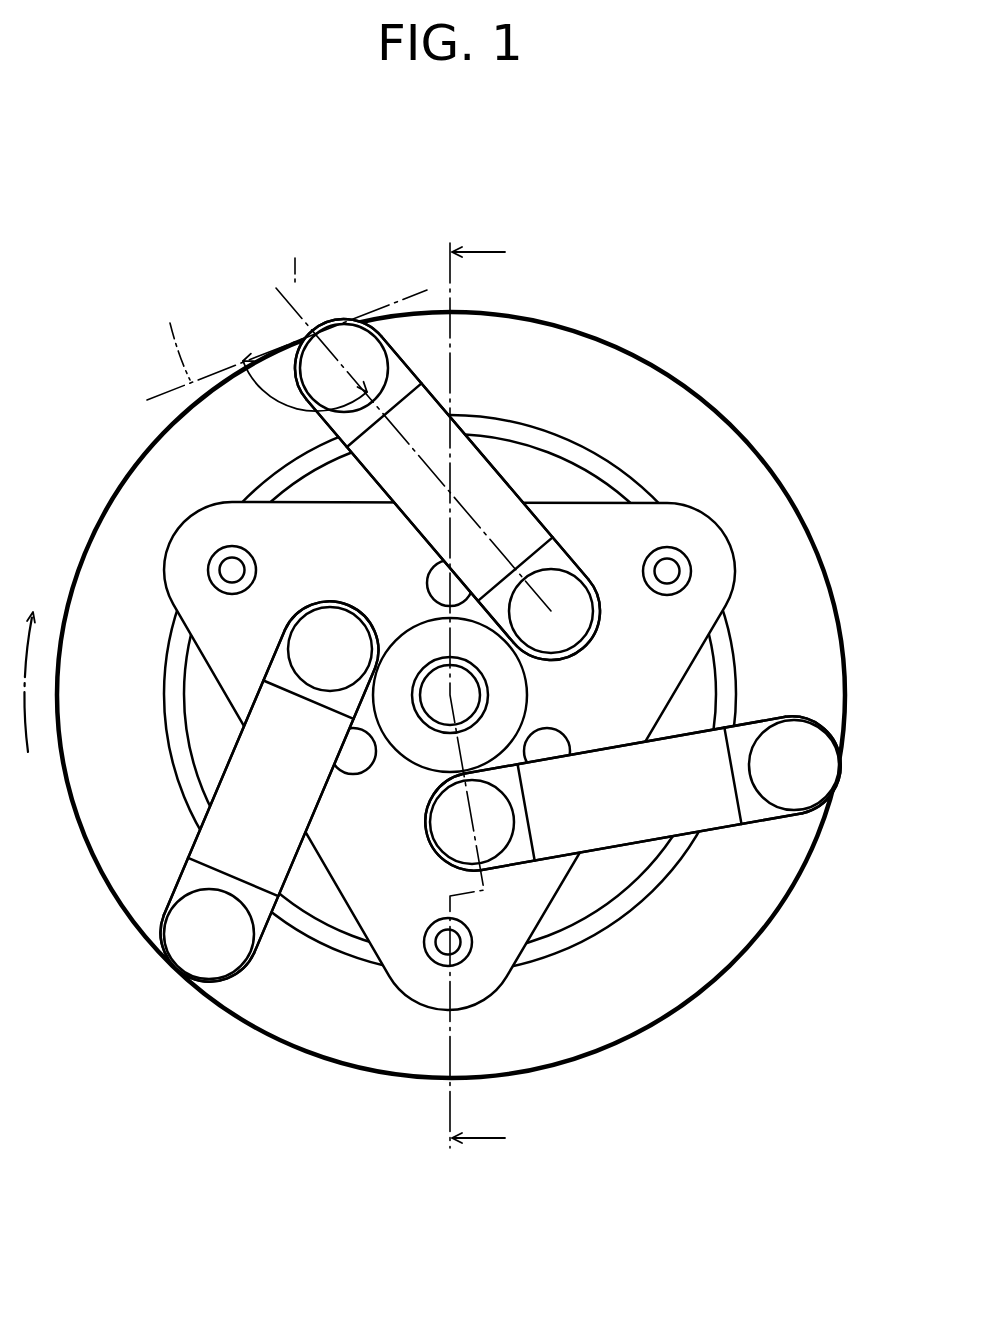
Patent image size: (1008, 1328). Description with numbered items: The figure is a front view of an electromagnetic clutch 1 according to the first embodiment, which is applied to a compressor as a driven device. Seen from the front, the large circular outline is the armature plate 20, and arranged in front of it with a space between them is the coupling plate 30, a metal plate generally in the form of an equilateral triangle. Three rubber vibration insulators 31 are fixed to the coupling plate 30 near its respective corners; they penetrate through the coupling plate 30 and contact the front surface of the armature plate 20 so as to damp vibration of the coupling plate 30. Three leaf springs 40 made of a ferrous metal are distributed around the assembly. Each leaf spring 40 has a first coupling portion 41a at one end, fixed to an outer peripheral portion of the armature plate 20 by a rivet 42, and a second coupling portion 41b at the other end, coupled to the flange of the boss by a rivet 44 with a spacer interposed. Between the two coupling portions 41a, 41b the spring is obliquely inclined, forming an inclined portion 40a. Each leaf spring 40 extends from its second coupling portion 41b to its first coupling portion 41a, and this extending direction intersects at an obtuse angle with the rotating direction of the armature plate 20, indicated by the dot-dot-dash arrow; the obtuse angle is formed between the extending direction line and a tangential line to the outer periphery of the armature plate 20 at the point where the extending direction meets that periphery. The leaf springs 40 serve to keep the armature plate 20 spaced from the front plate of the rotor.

The electromagnetic clutch 1 is at (461, 690).
The armature plate 20 is at (650, 387).
The coupling plate 30 is at (680, 528).
The rubber vibration insulator 31 is at (210, 565).
The leaf spring 40 is at (512, 483).
The inclined portion 40a is at (475, 470).
The first coupling portion 41a is at (394, 334).
The second coupling portion 41b is at (316, 612).
The rivet 42 is at (318, 357).
The rivet 44 is at (331, 647).